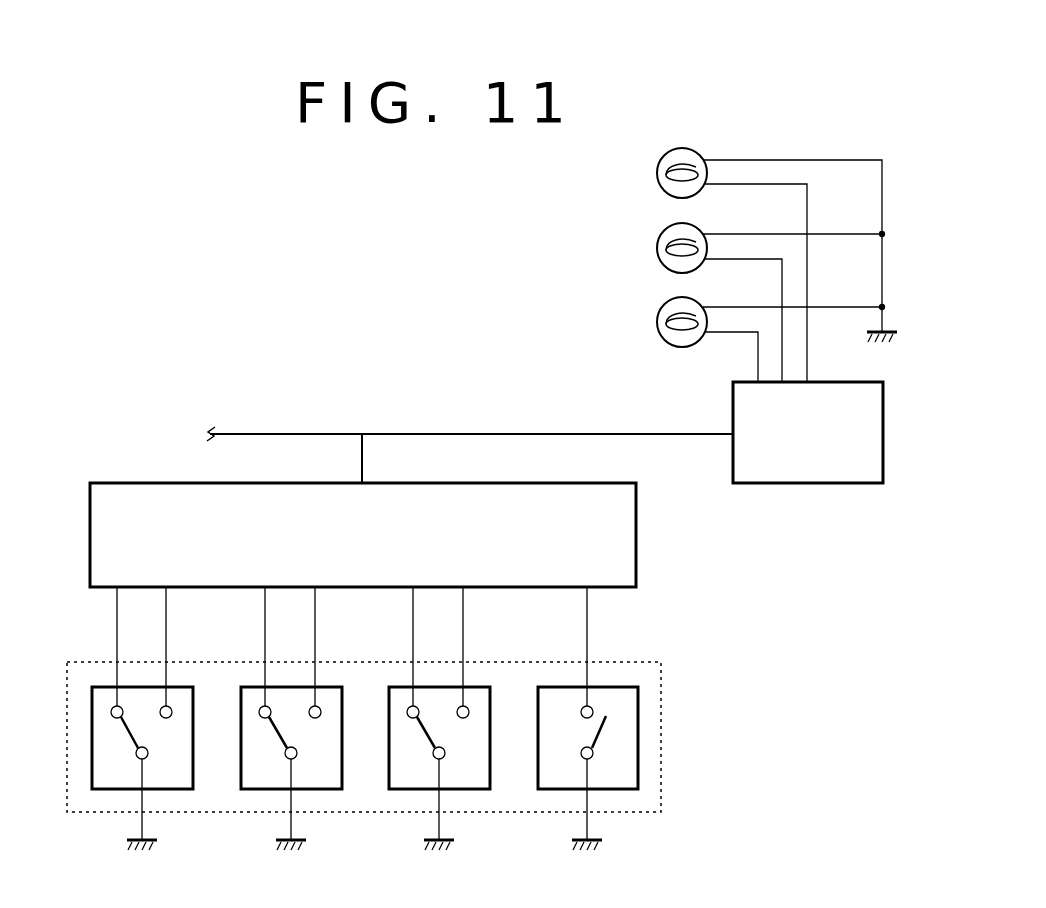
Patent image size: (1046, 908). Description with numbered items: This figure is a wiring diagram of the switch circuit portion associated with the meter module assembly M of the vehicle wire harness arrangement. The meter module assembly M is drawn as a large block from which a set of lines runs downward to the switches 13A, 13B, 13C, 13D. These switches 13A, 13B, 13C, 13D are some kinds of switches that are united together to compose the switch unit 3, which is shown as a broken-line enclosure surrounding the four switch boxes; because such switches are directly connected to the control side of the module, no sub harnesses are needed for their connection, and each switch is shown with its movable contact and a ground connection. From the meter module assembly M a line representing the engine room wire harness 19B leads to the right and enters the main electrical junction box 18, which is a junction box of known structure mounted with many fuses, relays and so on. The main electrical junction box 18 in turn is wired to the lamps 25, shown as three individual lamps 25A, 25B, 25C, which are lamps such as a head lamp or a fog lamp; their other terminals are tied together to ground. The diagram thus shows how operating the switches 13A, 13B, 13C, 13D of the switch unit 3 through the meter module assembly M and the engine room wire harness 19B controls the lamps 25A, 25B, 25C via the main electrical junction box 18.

The lamps 25 is at (378, 223).
The lamp 25A is at (642, 172).
The lamp 25B is at (642, 247).
The lamp 25C is at (642, 321).
The main electrical junction box 18 is at (808, 483).
The engine room wire harness 19B is at (510, 433).
The meter module assembly M is at (636, 525).
The switch unit 3 is at (661, 703).
The switch 13A is at (118, 790).
The switch 13B is at (266, 790).
The switch 13C is at (416, 790).
The switch 13D is at (563, 790).